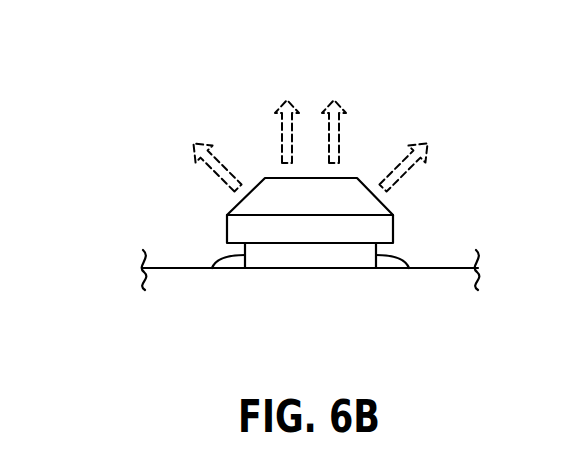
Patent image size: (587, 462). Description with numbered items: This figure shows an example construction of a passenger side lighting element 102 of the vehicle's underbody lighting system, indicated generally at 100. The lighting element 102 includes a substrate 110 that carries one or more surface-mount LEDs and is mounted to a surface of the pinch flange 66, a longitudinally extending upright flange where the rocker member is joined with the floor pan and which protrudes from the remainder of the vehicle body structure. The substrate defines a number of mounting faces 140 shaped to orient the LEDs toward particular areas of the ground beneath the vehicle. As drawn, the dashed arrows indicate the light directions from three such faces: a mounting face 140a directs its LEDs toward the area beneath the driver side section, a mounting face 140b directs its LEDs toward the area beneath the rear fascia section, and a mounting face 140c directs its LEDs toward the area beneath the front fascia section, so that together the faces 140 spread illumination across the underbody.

The light emitting device 100 is at (230, 104).
The mounting faces 140 is at (307, 138).
The mounting face 140a is at (348, 178).
The mounting face 140b is at (237, 205).
The mounting face 140c is at (383, 203).
The pinch flange 66 is at (168, 269).
The passenger side lighting element 102 is at (212, 268).
The substrate 110 is at (409, 268).